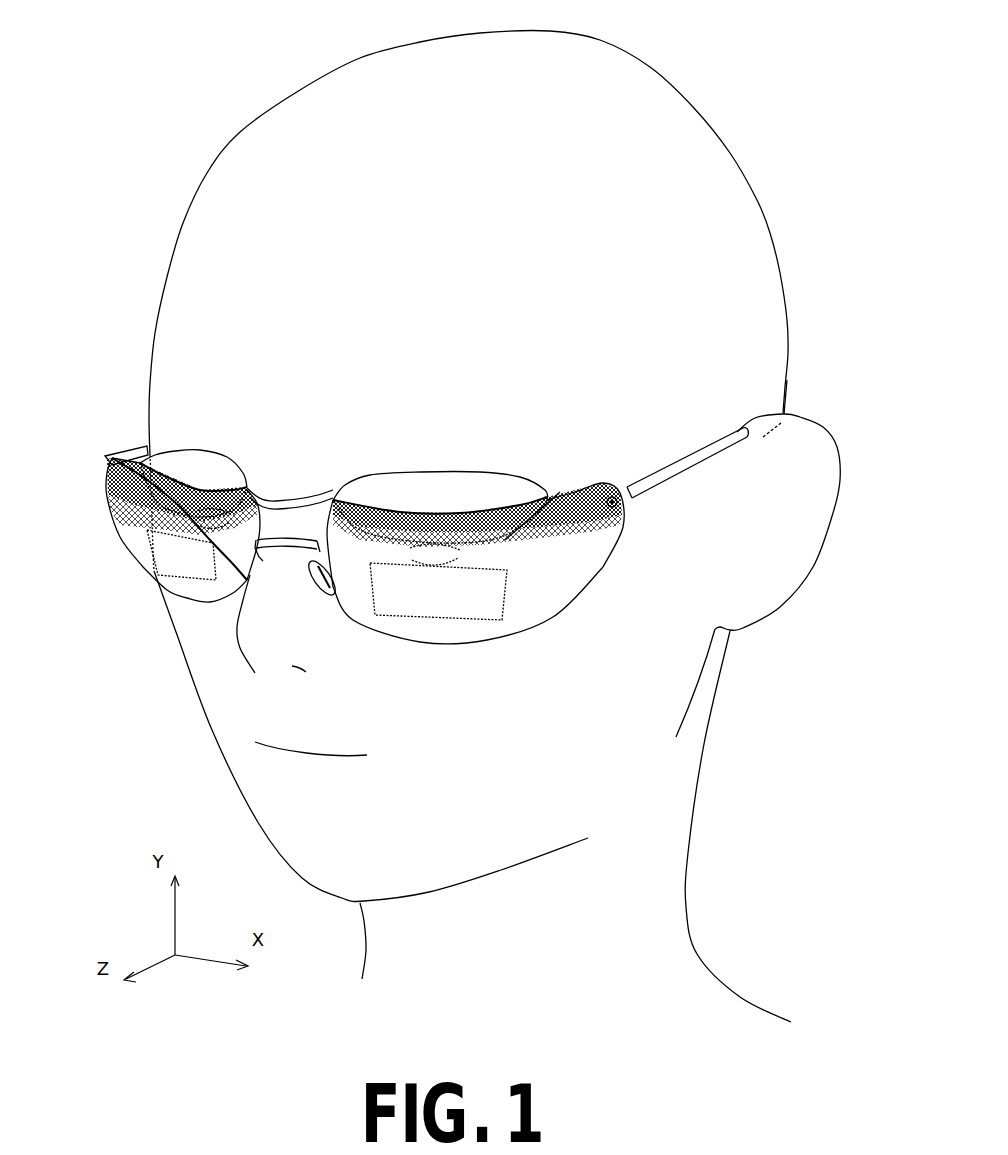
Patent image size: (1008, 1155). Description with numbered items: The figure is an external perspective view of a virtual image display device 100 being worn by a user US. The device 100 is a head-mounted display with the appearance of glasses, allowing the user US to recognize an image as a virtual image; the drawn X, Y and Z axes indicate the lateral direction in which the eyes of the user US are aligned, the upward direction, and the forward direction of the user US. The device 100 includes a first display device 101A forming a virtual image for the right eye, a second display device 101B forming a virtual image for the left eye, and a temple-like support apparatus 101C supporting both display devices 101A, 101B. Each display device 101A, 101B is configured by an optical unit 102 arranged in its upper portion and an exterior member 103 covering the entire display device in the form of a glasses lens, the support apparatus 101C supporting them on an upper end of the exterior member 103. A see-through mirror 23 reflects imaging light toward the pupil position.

The user US is at (765, 220).
The virtual image display device 100 is at (462, 398).
The first display device 101A is at (220, 449).
The second display device 101B is at (510, 459).
The support apparatus 101C is at (118, 438).
The optical unit 102 is at (187, 447).
The exterior member 103 is at (202, 592).
The see-through mirror 23 is at (155, 582).